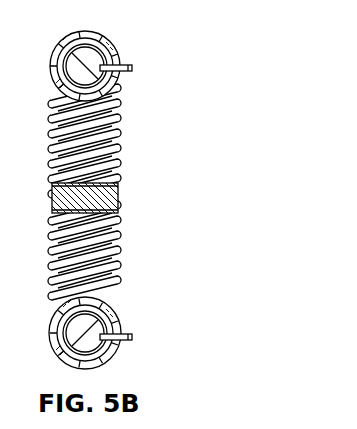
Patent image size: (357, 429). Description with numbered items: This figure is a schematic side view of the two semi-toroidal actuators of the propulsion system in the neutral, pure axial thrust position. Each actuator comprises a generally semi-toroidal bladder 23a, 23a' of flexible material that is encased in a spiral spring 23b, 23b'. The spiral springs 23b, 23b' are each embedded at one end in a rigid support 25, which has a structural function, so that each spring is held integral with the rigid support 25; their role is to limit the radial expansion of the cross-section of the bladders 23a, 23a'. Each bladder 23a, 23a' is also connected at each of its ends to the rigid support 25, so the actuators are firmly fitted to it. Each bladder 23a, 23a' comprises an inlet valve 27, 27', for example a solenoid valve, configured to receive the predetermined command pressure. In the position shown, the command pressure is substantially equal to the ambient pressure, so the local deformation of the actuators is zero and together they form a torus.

The bladder 23a is at (119, 142).
The spiral spring 23b is at (118, 141).
The bladder 23a' is at (119, 258).
The spiral spring 23b' is at (121, 244).
The rigid support 25 is at (117, 192).
The inlet valve 27 is at (124, 66).
The inlet valve 27' is at (123, 333).